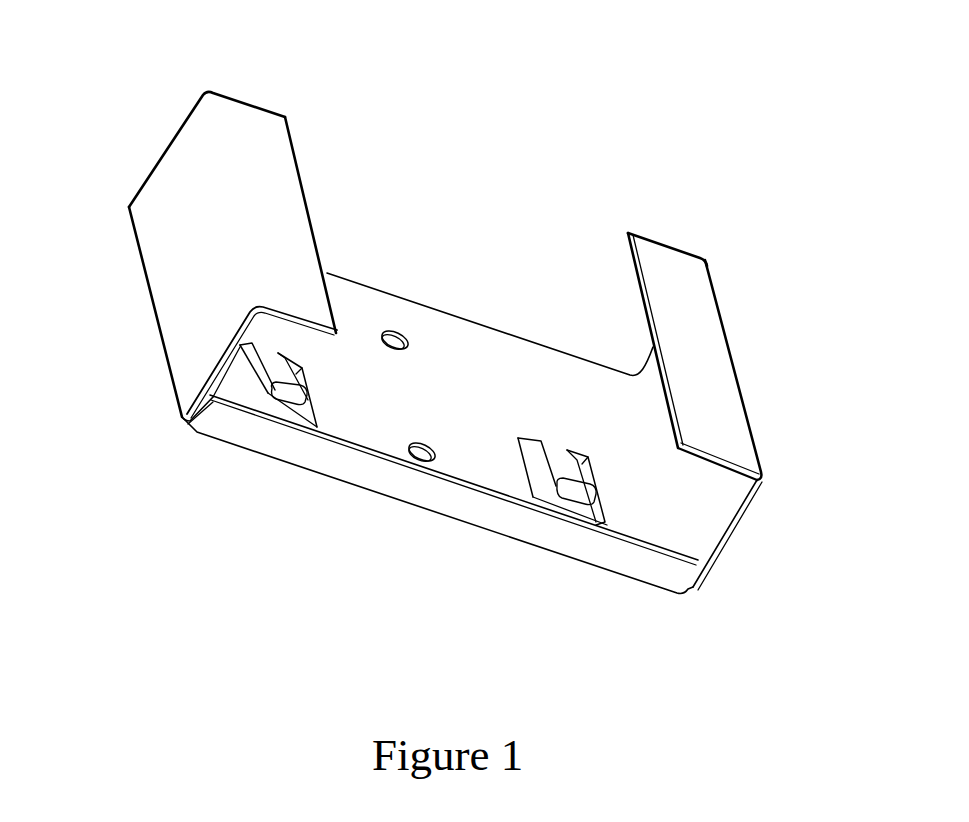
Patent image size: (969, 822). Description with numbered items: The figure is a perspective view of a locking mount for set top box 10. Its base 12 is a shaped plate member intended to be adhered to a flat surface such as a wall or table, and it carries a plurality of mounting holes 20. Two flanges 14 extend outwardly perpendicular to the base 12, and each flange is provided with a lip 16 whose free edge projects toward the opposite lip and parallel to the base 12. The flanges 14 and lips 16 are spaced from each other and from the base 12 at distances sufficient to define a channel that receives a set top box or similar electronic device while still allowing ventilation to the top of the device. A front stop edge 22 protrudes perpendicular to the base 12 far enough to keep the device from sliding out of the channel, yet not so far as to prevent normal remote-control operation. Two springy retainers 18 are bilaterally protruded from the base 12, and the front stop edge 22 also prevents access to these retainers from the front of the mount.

The locking mount for set top box 10 is at (702, 117).
The base 12 is at (483, 360).
The flange 14 is at (172, 192).
The lip 16 is at (272, 152).
The springy retainer 18 is at (270, 370).
The mounting hole 20 is at (410, 338).
The front stop edge 22 is at (350, 465).